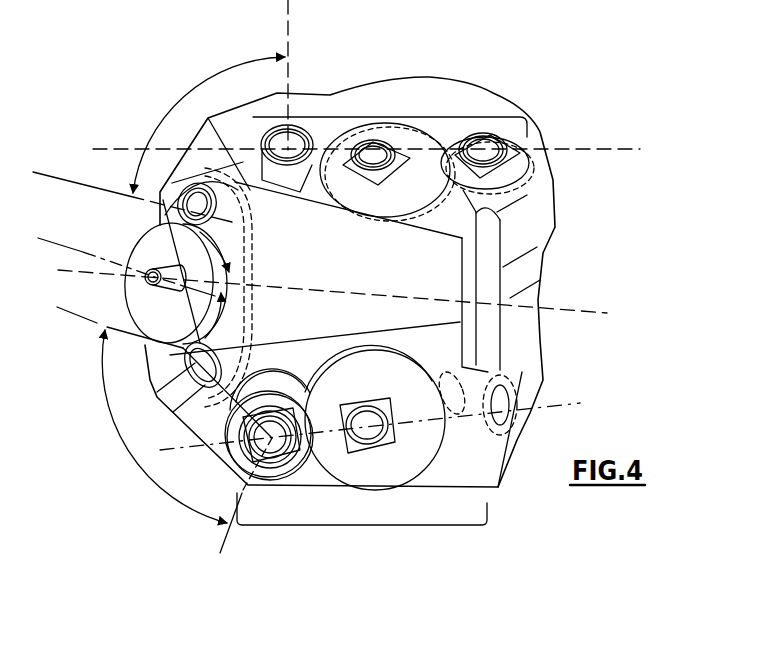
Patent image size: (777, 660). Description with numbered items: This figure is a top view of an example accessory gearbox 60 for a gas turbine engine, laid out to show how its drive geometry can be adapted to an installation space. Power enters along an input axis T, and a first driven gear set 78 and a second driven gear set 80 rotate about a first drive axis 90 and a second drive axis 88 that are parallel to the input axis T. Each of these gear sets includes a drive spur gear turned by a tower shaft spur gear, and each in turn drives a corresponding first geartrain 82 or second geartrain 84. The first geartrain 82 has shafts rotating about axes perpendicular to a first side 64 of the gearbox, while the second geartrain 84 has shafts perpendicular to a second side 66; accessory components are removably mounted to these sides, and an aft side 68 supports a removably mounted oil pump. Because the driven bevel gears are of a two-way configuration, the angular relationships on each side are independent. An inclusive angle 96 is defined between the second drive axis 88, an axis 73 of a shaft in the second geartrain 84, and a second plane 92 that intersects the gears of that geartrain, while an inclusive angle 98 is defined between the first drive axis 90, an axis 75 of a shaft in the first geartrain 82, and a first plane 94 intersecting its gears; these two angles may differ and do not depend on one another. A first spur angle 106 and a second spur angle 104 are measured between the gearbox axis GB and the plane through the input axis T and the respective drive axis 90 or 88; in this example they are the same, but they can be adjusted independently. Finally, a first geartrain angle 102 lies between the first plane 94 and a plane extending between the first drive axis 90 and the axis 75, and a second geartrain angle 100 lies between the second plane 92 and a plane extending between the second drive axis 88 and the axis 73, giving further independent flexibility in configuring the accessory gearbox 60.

The accessory gearbox 60 is at (620, 126).
The first side 64 is at (450, 450).
The second side 66 is at (483, 118).
The aft side 68 is at (522, 323).
The axis 73 is at (290, 10).
The axis 75 is at (235, 540).
The first driven gear set 78 is at (183, 383).
The second driven gear set 80 is at (212, 182).
The first geartrain 82 is at (363, 525).
The second geartrain 84 is at (402, 117).
The second drive axis 88 is at (60, 174).
The first drive axis 90 is at (98, 323).
The second plane 92 is at (369, 150).
The first plane 94 is at (340, 435).
The inclusive angle 96 is at (209, 125).
The inclusive angle 98 is at (164, 426).
The second geartrain angle 100 is at (322, 200).
The first geartrain angle 102 is at (319, 430).
The second spur angle 104 is at (228, 235).
The first spur angle 106 is at (233, 334).
The input axis T is at (60, 235).
The gearbox axis GB is at (600, 313).